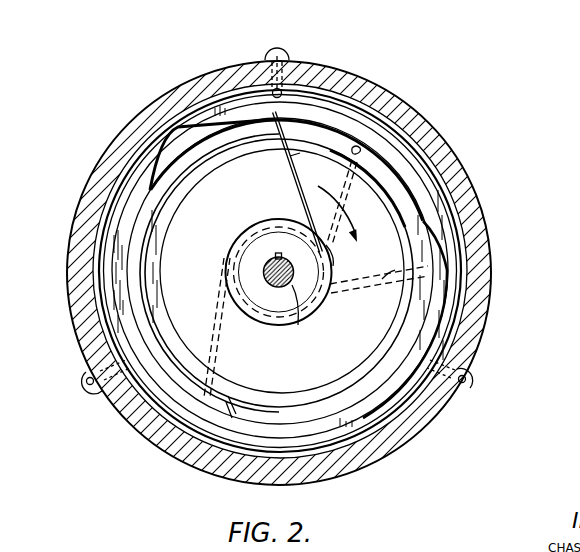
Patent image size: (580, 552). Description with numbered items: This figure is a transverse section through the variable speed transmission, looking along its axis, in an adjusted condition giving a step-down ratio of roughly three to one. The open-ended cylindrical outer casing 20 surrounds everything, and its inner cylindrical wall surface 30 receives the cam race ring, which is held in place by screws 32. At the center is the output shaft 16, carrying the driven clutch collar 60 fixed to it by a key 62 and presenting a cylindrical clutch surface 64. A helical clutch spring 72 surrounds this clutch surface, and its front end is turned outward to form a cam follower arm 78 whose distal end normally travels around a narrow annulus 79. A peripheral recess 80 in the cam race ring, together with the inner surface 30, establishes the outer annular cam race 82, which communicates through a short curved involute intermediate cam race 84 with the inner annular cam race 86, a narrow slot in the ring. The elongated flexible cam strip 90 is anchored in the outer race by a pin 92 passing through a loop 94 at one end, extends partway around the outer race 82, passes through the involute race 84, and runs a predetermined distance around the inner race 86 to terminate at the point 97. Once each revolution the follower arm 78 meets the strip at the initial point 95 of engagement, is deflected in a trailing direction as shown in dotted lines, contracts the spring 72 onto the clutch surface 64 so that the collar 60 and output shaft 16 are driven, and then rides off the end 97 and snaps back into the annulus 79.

The output shaft 16 is at (292, 301).
The outer casing 20 is at (483, 304).
The inner cylindrical wall surface 30 is at (197, 103).
The screws 32 is at (90, 388).
The driven clutch collar 60 is at (320, 303).
The key 62 is at (276, 254).
The cylindrical clutch surface 64 is at (253, 305).
The helical clutch spring 72 is at (240, 243).
The cam follower arm 78 is at (292, 190).
The annulus 79 is at (296, 153).
The peripheral recess 80 is at (140, 167).
The outer annular cam race 82 is at (118, 178).
The involute intermediate cam race 84 is at (330, 138).
The inner annular cam race 86 is at (145, 282).
The flexible cam strip 90 is at (217, 130).
The pin 92 is at (272, 90).
The loop 94 is at (282, 94).
The initial point of engagement 95 is at (284, 170).
The point of departure 97 is at (425, 230).